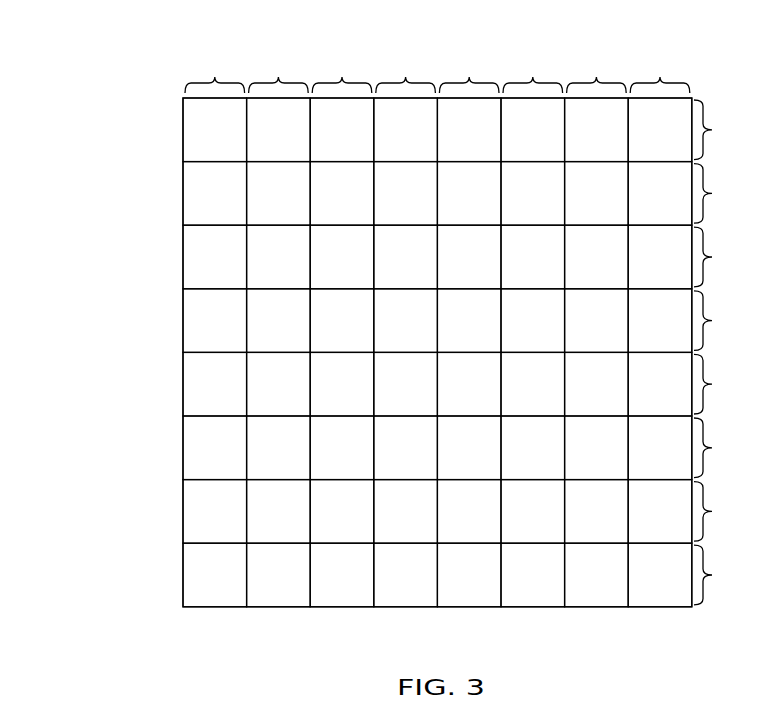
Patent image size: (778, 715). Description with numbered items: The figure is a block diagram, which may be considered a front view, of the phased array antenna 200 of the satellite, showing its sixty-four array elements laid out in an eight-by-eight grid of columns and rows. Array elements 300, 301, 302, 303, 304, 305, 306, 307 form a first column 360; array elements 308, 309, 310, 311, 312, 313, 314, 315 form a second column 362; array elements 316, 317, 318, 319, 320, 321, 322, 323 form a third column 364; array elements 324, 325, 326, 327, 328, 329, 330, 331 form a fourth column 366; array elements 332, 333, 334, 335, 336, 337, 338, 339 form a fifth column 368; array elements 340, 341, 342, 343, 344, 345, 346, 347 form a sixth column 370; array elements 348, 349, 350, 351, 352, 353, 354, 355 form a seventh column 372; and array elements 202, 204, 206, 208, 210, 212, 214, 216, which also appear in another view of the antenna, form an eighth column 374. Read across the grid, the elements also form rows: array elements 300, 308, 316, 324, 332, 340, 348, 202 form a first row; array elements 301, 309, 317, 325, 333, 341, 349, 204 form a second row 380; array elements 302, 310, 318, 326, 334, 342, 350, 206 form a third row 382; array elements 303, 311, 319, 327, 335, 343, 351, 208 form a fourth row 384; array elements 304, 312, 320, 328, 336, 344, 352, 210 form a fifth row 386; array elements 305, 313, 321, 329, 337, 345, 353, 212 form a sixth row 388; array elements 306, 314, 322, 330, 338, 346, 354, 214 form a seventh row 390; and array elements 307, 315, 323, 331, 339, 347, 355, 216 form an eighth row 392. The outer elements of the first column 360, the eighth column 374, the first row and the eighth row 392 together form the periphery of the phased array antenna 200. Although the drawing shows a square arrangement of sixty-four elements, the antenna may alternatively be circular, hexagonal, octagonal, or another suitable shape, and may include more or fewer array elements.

The phased array antenna 200 is at (108, 46).
The first column 360 is at (215, 72).
The second column 362 is at (279, 72).
The third column 364 is at (342, 72).
The fourth column 366 is at (406, 72).
The fifth column 368 is at (469, 72).
The sixth column 370 is at (533, 72).
The seventh column 372 is at (597, 72).
The eighth column 374 is at (691, 105).
The second row 380 is at (724, 194).
The third row 382 is at (724, 257).
The fourth row 384 is at (724, 321).
The fifth row 386 is at (724, 384).
The sixth row 388 is at (724, 448).
The seventh row 390 is at (724, 512).
The eighth row 392 is at (724, 575).
The array element 202 is at (643, 142).
The array element 204 is at (643, 205).
The array element 206 is at (643, 269).
The array element 208 is at (643, 333).
The array element 210 is at (643, 396).
The array element 212 is at (643, 460).
The array element 214 is at (643, 523).
The array element 216 is at (643, 587).
The array element 300 is at (232, 142).
The array element 301 is at (232, 205).
The array element 302 is at (232, 269).
The array element 303 is at (232, 333).
The array element 304 is at (232, 396).
The array element 305 is at (232, 460).
The array element 306 is at (232, 523).
The array element 307 is at (232, 587).
The array element 308 is at (261, 142).
The array element 309 is at (261, 205).
The array element 310 is at (261, 269).
The array element 311 is at (261, 333).
The array element 312 is at (261, 396).
The array element 313 is at (261, 460).
The array element 314 is at (261, 523).
The array element 315 is at (261, 587).
The array element 316 is at (325, 142).
The array element 317 is at (325, 205).
The array element 318 is at (325, 269).
The array element 319 is at (325, 333).
The array element 320 is at (325, 396).
The array element 321 is at (325, 460).
The array element 322 is at (325, 523).
The array element 323 is at (325, 587).
The array element 324 is at (423, 142).
The array element 325 is at (423, 205).
The array element 326 is at (423, 269).
The array element 327 is at (423, 333).
The array element 328 is at (423, 396).
The array element 329 is at (423, 460).
The array element 330 is at (423, 523).
The array element 331 is at (423, 587).
The array element 332 is at (452, 142).
The array element 333 is at (452, 205).
The array element 334 is at (452, 269).
The array element 335 is at (452, 333).
The array element 336 is at (452, 396).
The array element 337 is at (452, 460).
The array element 338 is at (452, 523).
The array element 339 is at (452, 587).
The array element 340 is at (550, 142).
The array element 341 is at (550, 205).
The array element 342 is at (550, 269).
The array element 343 is at (550, 333).
The array element 344 is at (550, 396).
The array element 345 is at (550, 460).
The array element 346 is at (550, 523).
The array element 347 is at (550, 587).
The array element 348 is at (579, 142).
The array element 349 is at (579, 205).
The array element 350 is at (579, 269).
The array element 351 is at (579, 333).
The array element 352 is at (579, 396).
The array element 353 is at (579, 460).
The array element 354 is at (579, 523).
The array element 355 is at (579, 587).